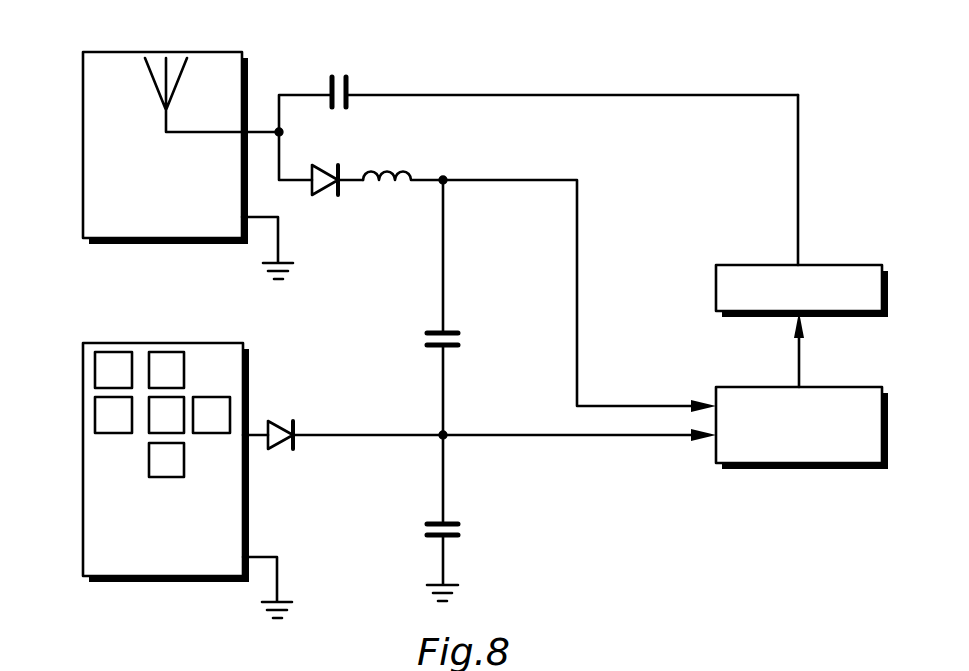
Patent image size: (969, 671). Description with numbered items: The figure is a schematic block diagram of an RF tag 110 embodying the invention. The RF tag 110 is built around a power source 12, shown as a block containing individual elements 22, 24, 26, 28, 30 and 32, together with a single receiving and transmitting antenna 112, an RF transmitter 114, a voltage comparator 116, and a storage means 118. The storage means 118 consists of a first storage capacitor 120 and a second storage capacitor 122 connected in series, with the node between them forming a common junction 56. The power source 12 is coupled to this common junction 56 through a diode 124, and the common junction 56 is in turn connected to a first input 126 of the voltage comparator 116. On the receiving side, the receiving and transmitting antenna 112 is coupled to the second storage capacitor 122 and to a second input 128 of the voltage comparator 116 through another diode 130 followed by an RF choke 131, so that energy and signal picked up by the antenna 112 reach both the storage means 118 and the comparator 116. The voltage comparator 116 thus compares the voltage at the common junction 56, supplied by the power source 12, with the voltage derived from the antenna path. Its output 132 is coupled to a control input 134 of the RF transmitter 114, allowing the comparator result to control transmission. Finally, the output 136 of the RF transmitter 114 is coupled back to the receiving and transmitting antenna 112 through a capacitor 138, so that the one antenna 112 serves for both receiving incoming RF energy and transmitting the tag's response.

The power source 12 is at (90, 527).
The power source cell 22 is at (102, 368).
The power source cell 24 is at (100, 418).
The power source cell 26 is at (160, 358).
The power source cell 28 is at (152, 425).
The power source cell 30 is at (222, 408).
The power source cell 32 is at (177, 458).
The common junction 56 is at (445, 431).
The RF tag 110 is at (611, 68).
The receiving and transmitting antenna 112 is at (188, 67).
The RF transmitter 114 is at (740, 264).
The voltage comparator 116 is at (820, 466).
The storage means 118 is at (358, 334).
The first storage capacitor 120 is at (460, 525).
The second storage capacitor 122 is at (427, 335).
The diode 124 is at (272, 448).
The first input 126 is at (715, 446).
The second input 128 is at (715, 400).
The diode 130 is at (315, 165).
The RF choke 131 is at (401, 187).
The output 132 is at (801, 385).
The control input 134 is at (797, 319).
The output 136 is at (803, 264).
The capacitor 138 is at (343, 76).